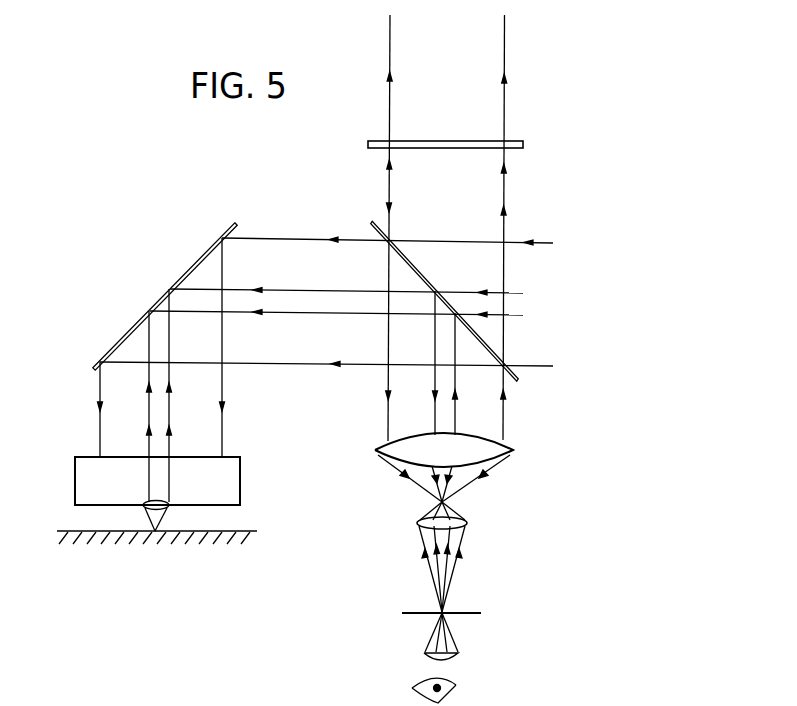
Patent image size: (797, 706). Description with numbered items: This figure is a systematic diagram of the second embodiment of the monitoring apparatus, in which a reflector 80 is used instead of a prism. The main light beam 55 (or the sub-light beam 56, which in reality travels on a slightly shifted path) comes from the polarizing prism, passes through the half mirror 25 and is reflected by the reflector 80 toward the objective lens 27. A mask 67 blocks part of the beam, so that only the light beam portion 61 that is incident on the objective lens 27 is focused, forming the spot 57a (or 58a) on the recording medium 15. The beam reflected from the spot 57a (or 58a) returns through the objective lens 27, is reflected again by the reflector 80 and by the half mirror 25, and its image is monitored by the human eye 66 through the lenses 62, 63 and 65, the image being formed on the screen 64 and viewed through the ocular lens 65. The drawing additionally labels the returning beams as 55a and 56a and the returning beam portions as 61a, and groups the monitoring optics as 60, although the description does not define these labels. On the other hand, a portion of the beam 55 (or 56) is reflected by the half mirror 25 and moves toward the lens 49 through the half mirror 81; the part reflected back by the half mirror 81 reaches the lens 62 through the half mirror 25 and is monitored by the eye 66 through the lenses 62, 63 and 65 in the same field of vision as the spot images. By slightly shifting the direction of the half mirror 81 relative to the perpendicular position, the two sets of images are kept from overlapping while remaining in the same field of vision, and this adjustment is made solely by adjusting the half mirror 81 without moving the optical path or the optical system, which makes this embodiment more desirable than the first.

The recording medium 15 is at (70, 530).
The half mirror 25 is at (417, 262).
The objective lens 27 is at (160, 509).
The lens 49 is at (274, 697).
The main light beam 55 is at (507, 168).
The sub-light beam 56 is at (78, 411).
The reflected first beam 55a is at (507, 210).
The reflected second beam 56a is at (466, 336).
The spot 57a is at (154, 533).
The spot 58a is at (136, 553).
The detection system 60 is at (500, 520).
The light beam portion 61 is at (257, 288).
The reflected auxiliary beam 61a is at (148, 388).
The lens 62 is at (500, 458).
The lens 63 is at (418, 521).
The screen 64 is at (470, 612).
The ocular lens 65 is at (428, 655).
The human eye 66 is at (452, 688).
The mask 67 is at (75, 478).
The reflector 80 is at (163, 292).
The half mirror 81 is at (520, 141).